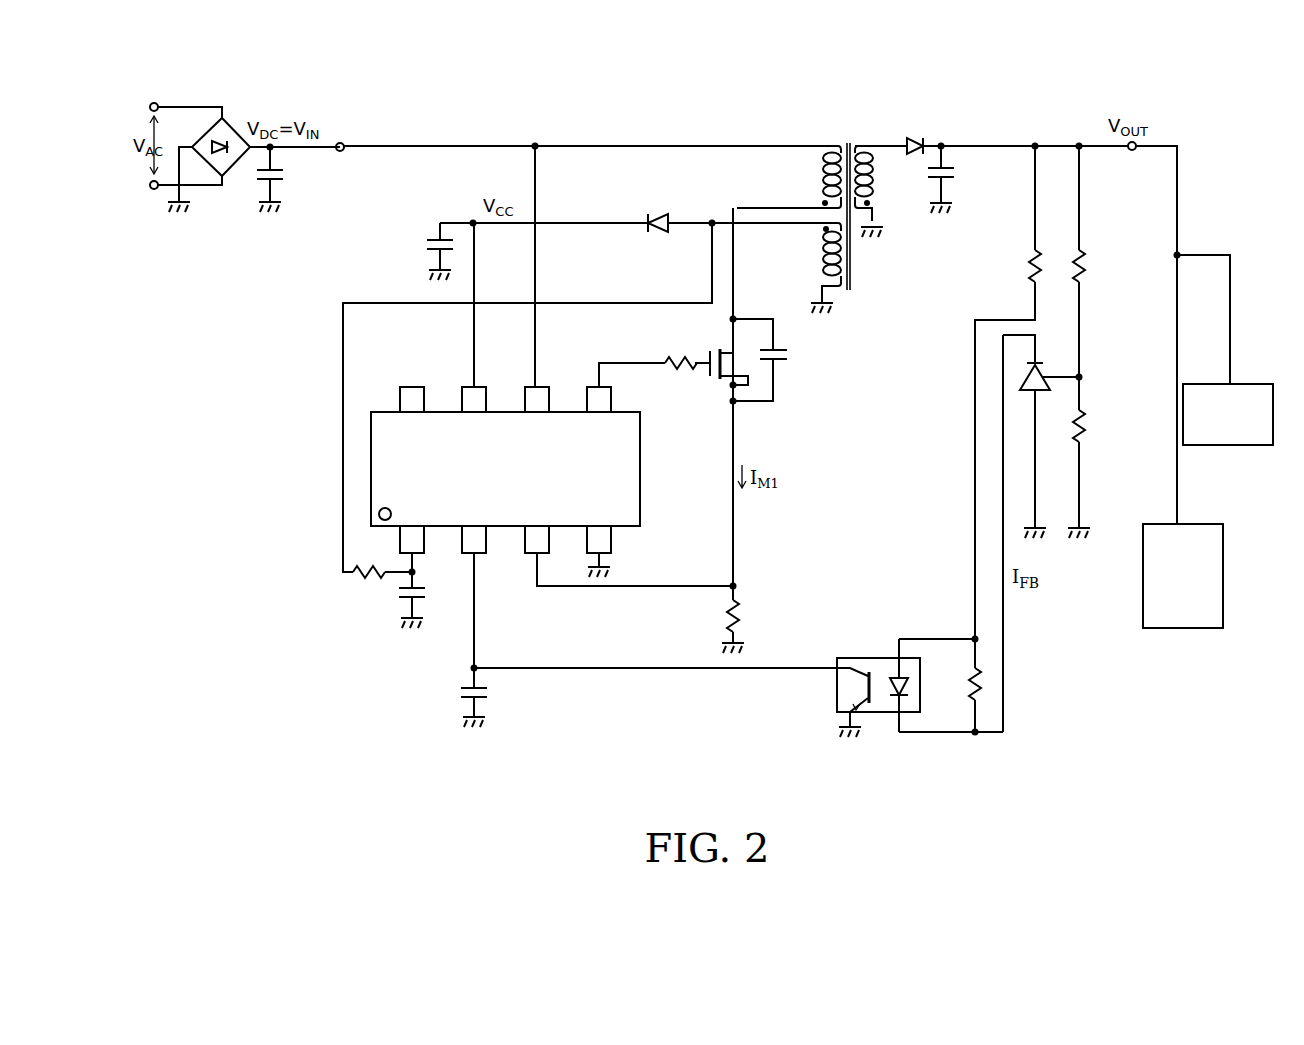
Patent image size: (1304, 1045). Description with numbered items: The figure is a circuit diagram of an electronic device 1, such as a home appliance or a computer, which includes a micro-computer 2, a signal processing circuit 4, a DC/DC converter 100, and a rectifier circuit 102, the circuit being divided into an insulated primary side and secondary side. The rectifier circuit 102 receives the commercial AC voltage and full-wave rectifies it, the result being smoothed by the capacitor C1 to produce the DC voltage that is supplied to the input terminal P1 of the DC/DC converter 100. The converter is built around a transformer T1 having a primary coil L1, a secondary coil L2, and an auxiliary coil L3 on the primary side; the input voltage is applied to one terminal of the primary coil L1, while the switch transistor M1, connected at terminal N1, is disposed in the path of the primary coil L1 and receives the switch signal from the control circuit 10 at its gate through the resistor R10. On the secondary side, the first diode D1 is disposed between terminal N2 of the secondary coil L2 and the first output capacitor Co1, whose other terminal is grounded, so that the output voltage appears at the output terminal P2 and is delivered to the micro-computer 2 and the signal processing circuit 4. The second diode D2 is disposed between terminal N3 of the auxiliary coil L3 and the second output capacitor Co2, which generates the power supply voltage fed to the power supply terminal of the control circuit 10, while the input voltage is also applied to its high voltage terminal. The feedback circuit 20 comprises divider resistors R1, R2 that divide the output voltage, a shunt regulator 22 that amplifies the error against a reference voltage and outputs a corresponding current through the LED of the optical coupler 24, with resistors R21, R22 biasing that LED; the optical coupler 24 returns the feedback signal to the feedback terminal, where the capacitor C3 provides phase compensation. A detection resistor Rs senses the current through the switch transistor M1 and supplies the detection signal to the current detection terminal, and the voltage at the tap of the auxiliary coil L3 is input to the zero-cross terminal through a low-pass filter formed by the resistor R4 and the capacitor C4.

The electronic device 1 is at (1245, 107).
The micro-computer 2 is at (1225, 605).
The signal processing circuit 4 is at (1256, 446).
The control circuit 10 is at (640, 490).
The feedback circuit 20 is at (939, 711).
The shunt regulator 22 is at (1040, 392).
The optical coupler 24 is at (832, 703).
The DC/DC converter 100 is at (1112, 786).
The rectifier circuit 102 is at (228, 125).
The capacitor C1 is at (287, 174).
The capacitor C3 is at (489, 700).
The capacitor C4 is at (428, 593).
The first output capacitor Co1 is at (957, 174).
The second output capacitor Co2 is at (422, 247).
The first diode D1 is at (914, 137).
The second diode D2 is at (651, 233).
The transformer T1 is at (821, 201).
The primary coil L1 is at (833, 143).
The secondary coil L2 is at (855, 143).
The auxiliary coil L3 is at (838, 291).
The terminal of the primary coil N1 is at (789, 154).
The terminal of the secondary coil N2 is at (877, 168).
The terminal of the auxiliary coil N3 is at (826, 279).
The switch transistor M1 is at (718, 378).
The input terminal P1 is at (342, 115).
The output terminal P2 is at (1132, 151).
The divider resistor R1 is at (1090, 266).
The divider resistor R2 is at (1090, 430).
The resistor R4 is at (365, 580).
The resistor R10 is at (675, 372).
The resistor R21 is at (1008, 392).
The resistor R22 is at (956, 685).
The detection resistor Rs is at (742, 607).